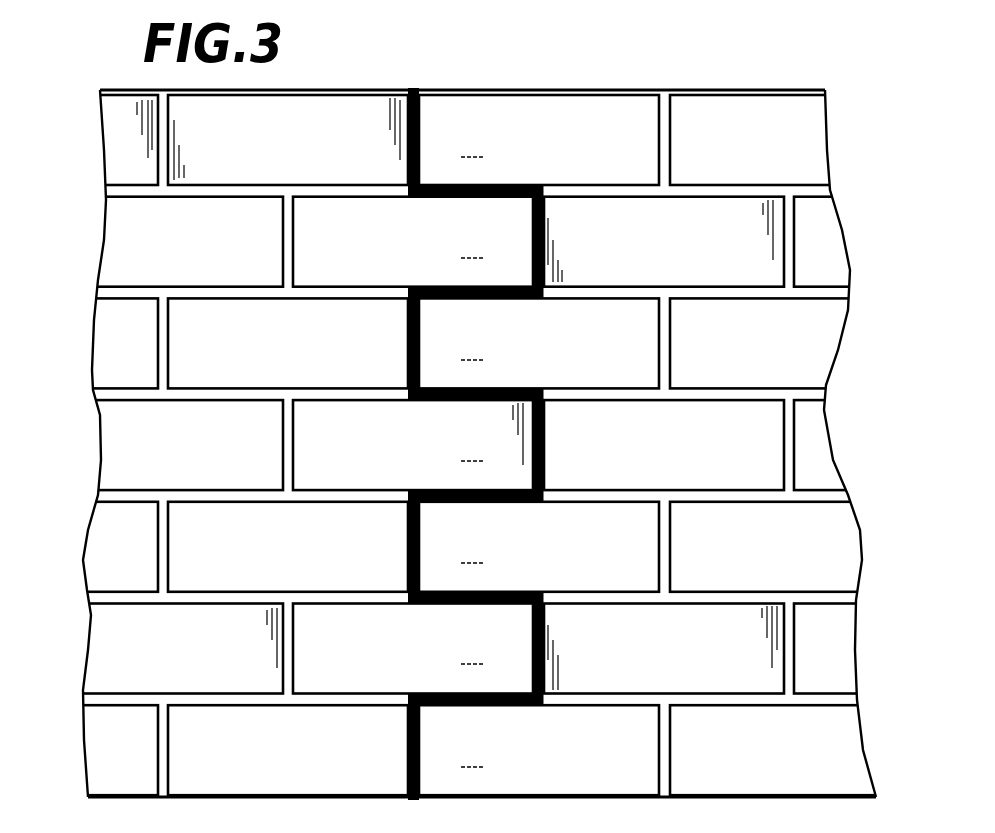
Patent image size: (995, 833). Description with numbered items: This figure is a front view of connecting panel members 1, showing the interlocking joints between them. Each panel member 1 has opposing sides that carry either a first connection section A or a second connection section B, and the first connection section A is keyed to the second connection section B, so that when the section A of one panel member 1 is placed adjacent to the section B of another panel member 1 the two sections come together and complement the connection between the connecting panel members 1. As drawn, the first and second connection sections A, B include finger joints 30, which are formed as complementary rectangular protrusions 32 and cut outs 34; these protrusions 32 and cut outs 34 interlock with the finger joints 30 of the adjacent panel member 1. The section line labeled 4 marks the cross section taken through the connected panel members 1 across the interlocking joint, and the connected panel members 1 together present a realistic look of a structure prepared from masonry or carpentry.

The panel member 1 is at (497, 442).
The finger joints 30 is at (543, 226).
The rectangular protrusions 32 is at (506, 223).
The cut outs 34 is at (429, 577).
The section line 4- 4 is at (65, 549).